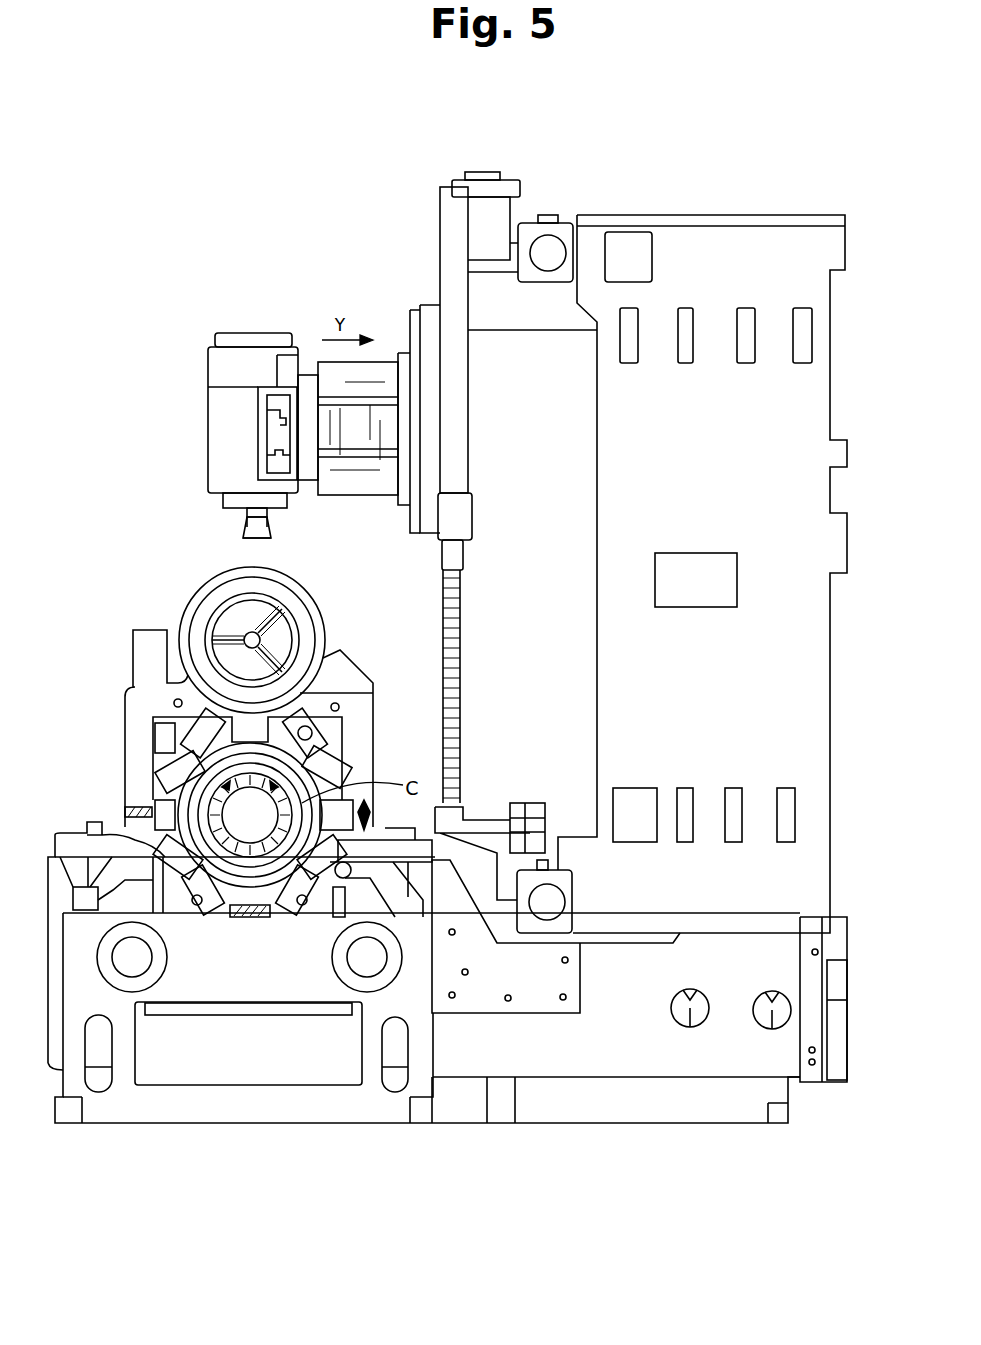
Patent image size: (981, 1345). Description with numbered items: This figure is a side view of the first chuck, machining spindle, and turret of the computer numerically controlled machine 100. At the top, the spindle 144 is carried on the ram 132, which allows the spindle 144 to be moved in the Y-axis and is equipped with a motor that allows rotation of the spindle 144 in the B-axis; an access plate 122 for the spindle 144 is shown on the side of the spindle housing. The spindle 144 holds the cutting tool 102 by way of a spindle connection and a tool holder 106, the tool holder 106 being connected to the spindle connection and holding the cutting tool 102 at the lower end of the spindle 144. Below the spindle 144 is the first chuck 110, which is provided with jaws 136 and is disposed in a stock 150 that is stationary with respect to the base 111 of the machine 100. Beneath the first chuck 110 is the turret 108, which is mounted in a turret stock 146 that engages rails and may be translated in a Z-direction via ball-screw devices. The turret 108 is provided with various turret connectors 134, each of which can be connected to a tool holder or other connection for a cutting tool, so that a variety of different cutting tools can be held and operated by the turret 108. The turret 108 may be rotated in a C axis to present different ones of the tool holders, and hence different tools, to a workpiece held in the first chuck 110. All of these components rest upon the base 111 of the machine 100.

The computer numerically controlled machine 100 is at (592, 197).
The cutting tool 102 is at (272, 537).
The tool holder 106 is at (247, 517).
The turret 108 is at (255, 870).
The first chuck 110 is at (240, 587).
The base 111 is at (77, 1022).
The access plate 122 is at (282, 403).
The ram 132 is at (377, 407).
The turret connectors 134 is at (323, 750).
The jaws 136 is at (278, 625).
The spindle 144 is at (209, 367).
The turret stock 146 is at (155, 737).
The stock 150 is at (175, 648).